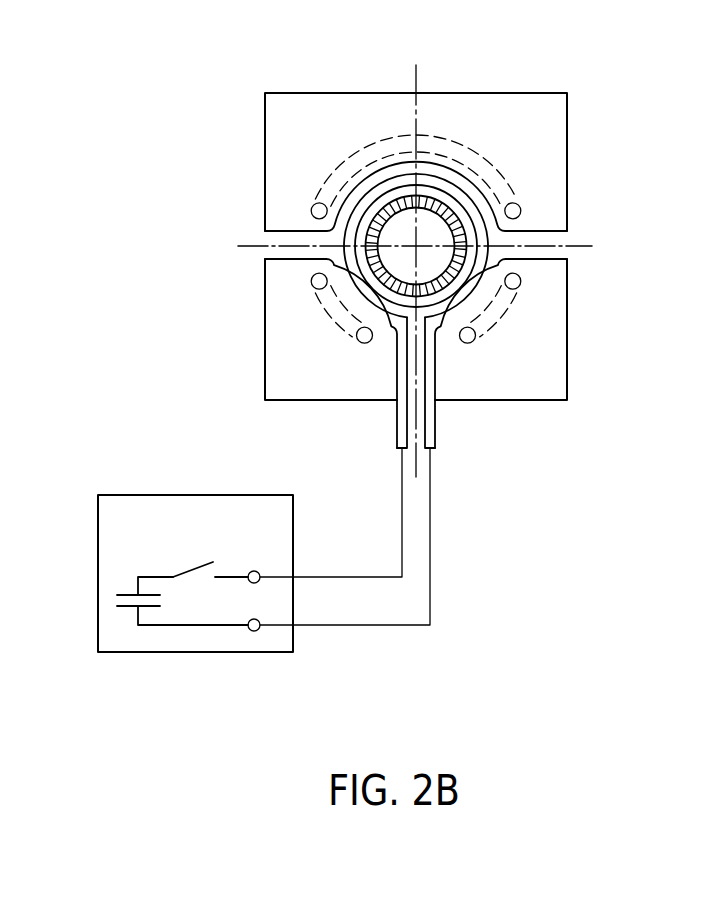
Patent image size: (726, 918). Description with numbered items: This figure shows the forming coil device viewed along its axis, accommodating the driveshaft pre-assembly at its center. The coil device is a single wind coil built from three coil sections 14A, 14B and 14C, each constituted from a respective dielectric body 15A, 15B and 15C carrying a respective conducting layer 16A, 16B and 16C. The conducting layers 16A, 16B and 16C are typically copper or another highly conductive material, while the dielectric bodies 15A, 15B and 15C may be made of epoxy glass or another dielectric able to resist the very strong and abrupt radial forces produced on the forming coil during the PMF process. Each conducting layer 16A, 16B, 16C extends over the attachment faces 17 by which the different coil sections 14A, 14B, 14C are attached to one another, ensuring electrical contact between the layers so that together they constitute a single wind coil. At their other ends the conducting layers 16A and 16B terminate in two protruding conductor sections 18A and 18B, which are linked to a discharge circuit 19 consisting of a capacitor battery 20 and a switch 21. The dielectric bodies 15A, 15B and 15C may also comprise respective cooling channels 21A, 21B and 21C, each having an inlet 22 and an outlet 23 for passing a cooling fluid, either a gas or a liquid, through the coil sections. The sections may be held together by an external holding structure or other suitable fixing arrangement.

The coil section 14A is at (243, 378).
The coil section 14B is at (592, 385).
The coil section 14C is at (233, 140).
The dielectric body 15A is at (342, 378).
The dielectric body 15B is at (552, 376).
The dielectric body 15C is at (375, 131).
The conducting layer 16A is at (387, 316).
The conducting layer 16B is at (492, 263).
The conducting layer 16C is at (448, 172).
The attachment faces 17 is at (300, 245).
The protruding conductor section 18A is at (400, 438).
The protruding conductor section 18B is at (437, 450).
The discharge circuit 19 is at (545, 241).
The capacitor battery 20 is at (128, 594).
The switch 21 is at (197, 562).
The cooling channel 21A is at (338, 308).
The cooling channel 21B is at (492, 312).
The cooling channel 21C is at (490, 178).
The inlet 22 is at (519, 205).
The outlet 23 is at (311, 207).